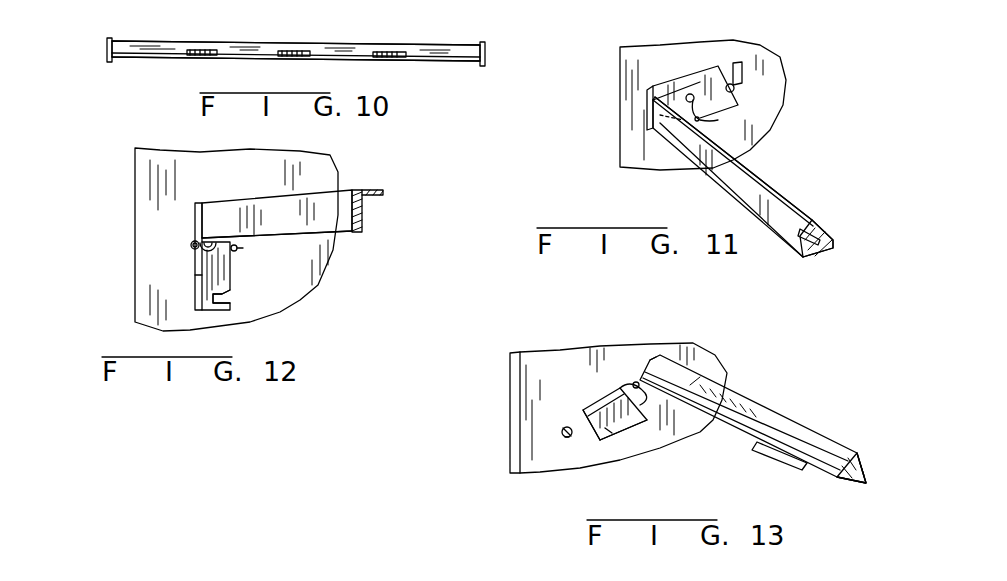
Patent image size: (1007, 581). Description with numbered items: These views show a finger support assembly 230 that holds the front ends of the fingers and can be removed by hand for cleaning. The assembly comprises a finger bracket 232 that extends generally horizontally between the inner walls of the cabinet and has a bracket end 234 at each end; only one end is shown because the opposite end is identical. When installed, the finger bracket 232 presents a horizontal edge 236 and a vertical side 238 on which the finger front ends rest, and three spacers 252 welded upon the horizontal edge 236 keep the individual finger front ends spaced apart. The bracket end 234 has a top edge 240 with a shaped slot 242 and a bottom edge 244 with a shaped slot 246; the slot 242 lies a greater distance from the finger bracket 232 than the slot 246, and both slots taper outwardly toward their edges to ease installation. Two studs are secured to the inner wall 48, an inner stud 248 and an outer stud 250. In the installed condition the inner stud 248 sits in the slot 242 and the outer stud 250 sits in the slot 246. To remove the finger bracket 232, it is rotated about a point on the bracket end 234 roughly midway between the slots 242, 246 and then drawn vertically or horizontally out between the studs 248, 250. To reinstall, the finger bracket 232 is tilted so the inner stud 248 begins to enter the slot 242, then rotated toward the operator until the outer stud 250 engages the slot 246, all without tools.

In FIG. 12, the inner wall 48 is at (247, 172).
In FIG. 11, the inner wall 48 is at (645, 160).
In FIG. 13, the inner wall 48 is at (510, 368).
In FIG. 12, the finger support assembly 230 is at (241, 243).
In FIG. 11, the finger support assembly 230 is at (705, 142).
In FIG. 13, the finger support assembly 230 is at (654, 418).
In FIG. 10, the finger bracket 232 is at (440, 45).
In FIG. 12, the finger bracket 232 is at (345, 190).
In FIG. 11, the finger bracket 232 is at (745, 190).
In FIG. 13, the finger bracket 232 is at (765, 420).
In FIG. 10, the bracket end 234 is at (107, 48).
In FIG. 12, the bracket end 234 is at (200, 285).
In FIG. 11, the bracket end 234 is at (675, 56).
In FIG. 13, the bracket end 234 is at (640, 450).
In FIG. 10, the horizontal edge 236 is at (350, 48).
In FIG. 12, the horizontal edge 236 is at (348, 232).
In FIG. 11, the horizontal edge 236 is at (832, 240).
In FIG. 13, the horizontal edge 236 is at (840, 478).
In FIG. 10, the vertical side 238 is at (445, 62).
In FIG. 12, the vertical side 238 is at (375, 197).
In FIG. 11, the vertical side 238 is at (762, 175).
In FIG. 13, the vertical side 238 is at (862, 465).
In FIG. 12, the top edge 240 is at (230, 278).
In FIG. 11, the top edge 240 is at (707, 68).
In FIG. 13, the top edge 240 is at (663, 443).
In FIG. 12, the shaped slot 242 is at (233, 298).
In FIG. 11, the shaped slot 242 is at (740, 63).
In FIG. 13, the shaped slot 242 is at (617, 440).
In FIG. 12, the bottom edge 244 is at (205, 270).
In FIG. 11, the bottom edge 244 is at (705, 115).
In FIG. 13, the bottom edge 244 is at (600, 405).
In FIG. 12, the shaped slot 246 is at (192, 250).
In FIG. 11, the shaped slot 246 is at (697, 120).
In FIG. 13, the shaped slot 246 is at (632, 383).
In FIG. 12, the inner stud 248 is at (243, 248).
In FIG. 11, the inner stud 248 is at (734, 88).
In FIG. 13, the inner stud 248 is at (615, 440).
In FIG. 12, the outer stud 250 is at (193, 243).
In FIG. 11, the outer stud 250 is at (687, 95).
In FIG. 13, the outer stud 250 is at (562, 430).
In FIG. 10, the spacer 252 is at (203, 50).
In FIG. 11, the spacer 252 is at (810, 227).
In FIG. 13, the spacer 252 is at (780, 460).